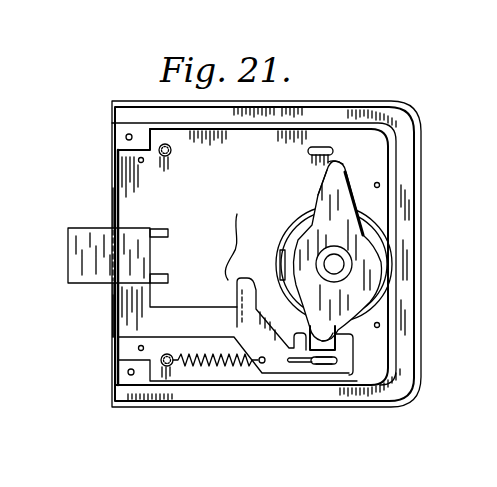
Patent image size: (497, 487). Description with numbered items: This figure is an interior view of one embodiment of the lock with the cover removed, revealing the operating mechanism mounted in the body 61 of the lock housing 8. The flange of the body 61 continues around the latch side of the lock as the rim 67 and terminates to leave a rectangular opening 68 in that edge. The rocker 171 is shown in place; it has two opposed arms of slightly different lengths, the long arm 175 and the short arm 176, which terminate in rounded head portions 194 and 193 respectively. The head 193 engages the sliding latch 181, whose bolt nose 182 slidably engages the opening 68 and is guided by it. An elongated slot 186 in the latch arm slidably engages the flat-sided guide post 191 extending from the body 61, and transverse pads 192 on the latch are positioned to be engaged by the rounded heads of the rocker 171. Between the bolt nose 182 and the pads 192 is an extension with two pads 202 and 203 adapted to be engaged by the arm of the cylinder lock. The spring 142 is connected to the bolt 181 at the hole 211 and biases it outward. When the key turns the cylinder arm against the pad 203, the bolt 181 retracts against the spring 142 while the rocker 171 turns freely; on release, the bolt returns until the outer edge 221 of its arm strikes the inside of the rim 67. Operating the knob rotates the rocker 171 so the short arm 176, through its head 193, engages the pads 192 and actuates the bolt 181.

The housing 8 is at (425, 402).
The body 61 is at (368, 160).
The rim 67 is at (117, 333).
The rectangular opening 68 is at (112, 283).
The spring 142 is at (205, 367).
The rocker 171 is at (358, 253).
The long arm 175 is at (338, 202).
The short arm 176 is at (386, 307).
The sliding latch 181 is at (193, 318).
The bolt nose 182 is at (138, 250).
The elongated slot 186 is at (303, 372).
The guide post 191 is at (328, 366).
The transverse pads 192 is at (333, 148).
The head portion 193 is at (350, 338).
The head portion 194 is at (338, 169).
The pad 202 is at (233, 240).
The pad 203 is at (256, 321).
The hole 211 is at (263, 374).
The outer edge 221 is at (115, 310).